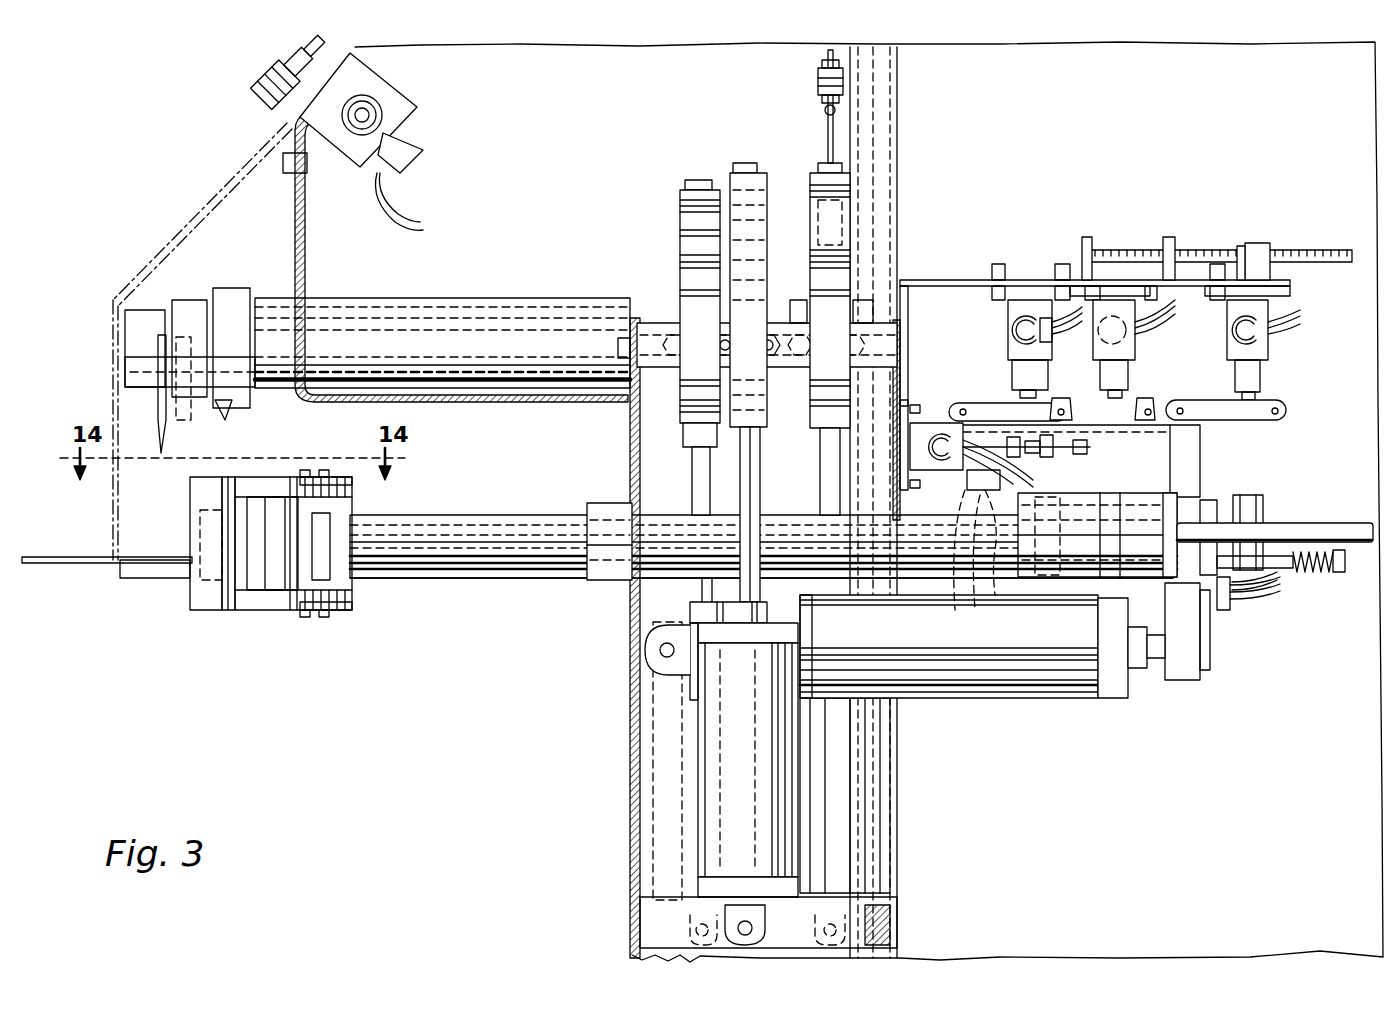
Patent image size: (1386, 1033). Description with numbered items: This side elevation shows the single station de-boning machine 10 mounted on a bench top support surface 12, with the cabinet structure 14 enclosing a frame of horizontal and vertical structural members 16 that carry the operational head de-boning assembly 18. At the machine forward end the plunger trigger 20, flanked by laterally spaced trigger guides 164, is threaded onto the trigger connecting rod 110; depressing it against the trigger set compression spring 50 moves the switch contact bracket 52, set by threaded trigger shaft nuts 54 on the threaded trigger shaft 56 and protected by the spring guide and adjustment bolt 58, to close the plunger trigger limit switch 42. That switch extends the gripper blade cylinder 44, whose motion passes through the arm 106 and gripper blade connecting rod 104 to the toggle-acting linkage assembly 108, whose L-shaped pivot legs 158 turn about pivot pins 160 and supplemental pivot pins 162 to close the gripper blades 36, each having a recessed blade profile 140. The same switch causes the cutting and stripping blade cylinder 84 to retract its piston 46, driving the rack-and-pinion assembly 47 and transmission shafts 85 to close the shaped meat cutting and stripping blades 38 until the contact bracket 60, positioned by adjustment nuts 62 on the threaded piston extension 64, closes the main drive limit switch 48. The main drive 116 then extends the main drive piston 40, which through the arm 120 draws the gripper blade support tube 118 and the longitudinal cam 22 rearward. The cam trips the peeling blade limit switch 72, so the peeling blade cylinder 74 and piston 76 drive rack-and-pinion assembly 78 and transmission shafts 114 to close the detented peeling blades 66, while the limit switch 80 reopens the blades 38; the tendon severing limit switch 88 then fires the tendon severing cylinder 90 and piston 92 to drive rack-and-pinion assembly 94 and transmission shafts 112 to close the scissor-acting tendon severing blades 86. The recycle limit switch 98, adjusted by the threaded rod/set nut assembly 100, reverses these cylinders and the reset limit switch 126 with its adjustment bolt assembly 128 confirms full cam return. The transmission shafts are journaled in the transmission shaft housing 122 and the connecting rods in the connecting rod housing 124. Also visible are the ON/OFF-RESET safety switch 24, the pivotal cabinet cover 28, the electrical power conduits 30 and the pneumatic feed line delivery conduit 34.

The single station anatomical section de-boning machine 10 is at (170, 122).
The bench top support surface 12 is at (58, 555).
The cabinet structure 14 is at (1185, 48).
The structural members 16 is at (955, 280).
The operational head de-boning assembly 18 is at (152, 718).
The machine plunger trigger 20 is at (185, 520).
The longitudinal cam 22 is at (1175, 432).
The ON/OFF-RESET safety switch 24 is at (248, 72).
The pivotal cabinet cover 28 is at (185, 225).
The primary electrical power switch conduits 30 is at (377, 180).
The pneumatic feed line delivery conduit 34 is at (380, 105).
The cooperative toggle-acting anatomical section gripper blades 36 is at (188, 615).
The shaped cooperative meat cutting and stripping blades 38 is at (157, 422).
The main drive piston 40 is at (1150, 668).
The plunger trigger electrical solenoid air valve limit switch 42 is at (1240, 490).
The gripper blade cylinder 44 is at (1078, 486).
The meat cutting and stripping blade cylinder piston 46 is at (822, 475).
The meat cutting and stripping rack-and-pinion assembly 47 is at (795, 165).
The main drive piston electrical solenoid air valve limit switch 48 is at (850, 235).
The trigger set compression spring 50 is at (1295, 580).
The plunger trigger switch contact bracket 52 is at (1275, 520).
The threaded trigger shaft nuts 54 is at (1325, 527).
The threaded trigger shaft 56 is at (1345, 545).
The trigger set compression spring guide and adjustment bolt 58 is at (1340, 575).
The main drive piston limit switch contact bracket 60 is at (818, 82).
The adjustment nuts 62 is at (822, 64).
The threaded cylinder piston extension 64 is at (832, 108).
The detented peeling blades 66 is at (177, 418).
The detented peeling blade electrical solenoid air valve limit switch 72 is at (963, 615).
The detented peeling blade cylinder 74 is at (700, 768).
The detented peeling blade cylinder piston 76 is at (740, 480).
The detented peeling blade rack-and-pinion assembly 78 is at (700, 130).
The meat cutting and stripping blade electrical solenoid air valve limit switch 80 is at (1012, 365).
The meat cutting and stripping blade cylinder 84 is at (893, 752).
The blade rotating transmission shafts 85 is at (450, 330).
The scissor-acting tendon severing blades 86 is at (228, 408).
The tendon severing blade electrical solenoid air valve limit switch 88 is at (1135, 375).
The tendon severing blade cylinder 90 is at (643, 815).
The tendon severing blade cylinder piston 92 is at (692, 462).
The tendon severing blade rack-and-pinion assembly 94 is at (650, 240).
The machine recycle electrical solenoid air valve limit switch 98 is at (1272, 378).
The third threaded rod/set nut adjustment assembly 100 is at (1268, 225).
The gripper blade connecting rod 104 is at (275, 600).
The gripper blade cylinder to connecting rod arm 106 is at (1240, 610).
The pivotally operable toggle-acting linkage assembly 108 is at (440, 495).
The trigger connecting rod 110 is at (452, 580).
The blade rotating transmission shafts 112 is at (370, 300).
The peeling blade rotating transmission shafts 114 is at (400, 312).
The compound multiple-acting pneumatic cylinder main drive 116 is at (1010, 698).
The gripper blade support tube 118 is at (470, 515).
The drive piston to support tube arm 120 is at (1230, 472).
The transmission shaft housing 122 is at (330, 300).
The connecting rod housing 124 is at (610, 503).
The reset limit switch 126 is at (940, 423).
The reset limit switch adjustment bolt assembly 128 is at (1075, 545).
The recessed blade profile 140 is at (190, 545).
The gripper blade supporting pivot legs 158 is at (280, 478).
The linear to pivotal motion translation pivot pins 160 is at (322, 470).
The supplemental pivot pins 162 is at (245, 690).
The anatomical section trigger guides 164 is at (195, 575).